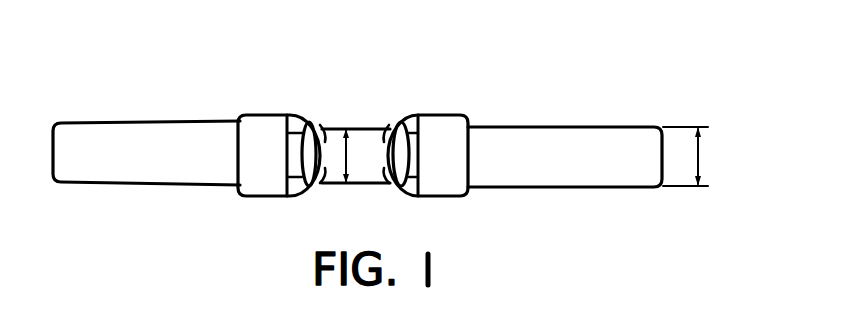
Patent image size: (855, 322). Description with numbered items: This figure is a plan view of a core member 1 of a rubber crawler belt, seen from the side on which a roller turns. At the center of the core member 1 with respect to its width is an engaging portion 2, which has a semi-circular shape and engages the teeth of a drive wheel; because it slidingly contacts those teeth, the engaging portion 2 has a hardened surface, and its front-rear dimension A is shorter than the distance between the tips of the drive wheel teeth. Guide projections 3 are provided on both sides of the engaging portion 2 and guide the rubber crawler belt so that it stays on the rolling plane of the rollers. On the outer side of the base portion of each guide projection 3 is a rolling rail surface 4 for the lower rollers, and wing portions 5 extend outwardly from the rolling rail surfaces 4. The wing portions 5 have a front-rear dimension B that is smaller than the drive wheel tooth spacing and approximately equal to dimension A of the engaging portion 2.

The core member 1 is at (481, 52).
The engaging portion 2 is at (362, 124).
The guide projections 3 is at (426, 128).
The rolling rail surface 4 is at (448, 120).
The wing portions 5 is at (548, 127).